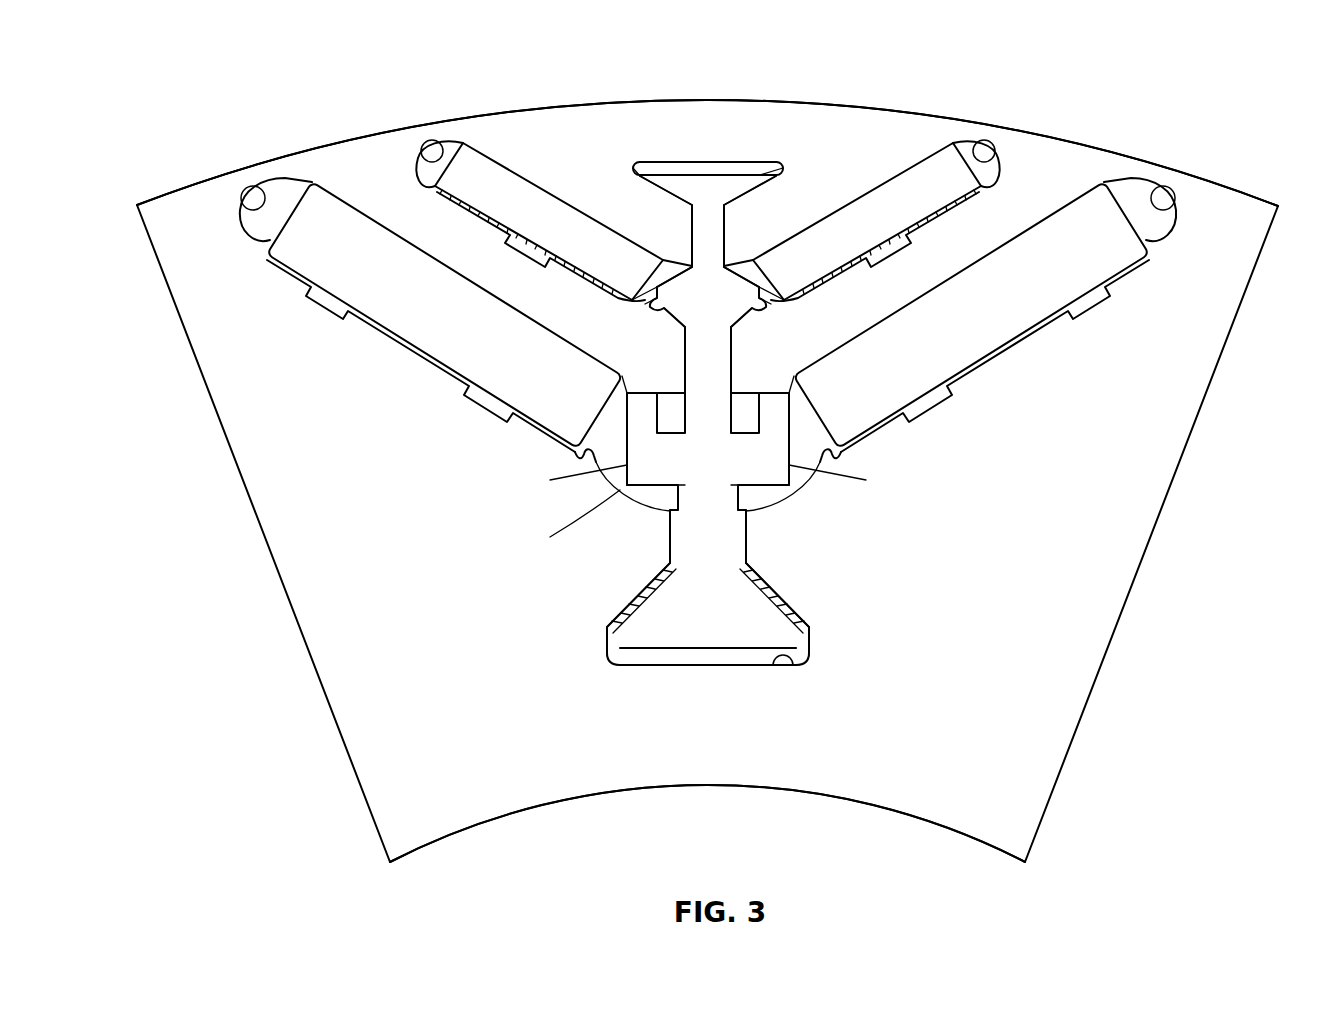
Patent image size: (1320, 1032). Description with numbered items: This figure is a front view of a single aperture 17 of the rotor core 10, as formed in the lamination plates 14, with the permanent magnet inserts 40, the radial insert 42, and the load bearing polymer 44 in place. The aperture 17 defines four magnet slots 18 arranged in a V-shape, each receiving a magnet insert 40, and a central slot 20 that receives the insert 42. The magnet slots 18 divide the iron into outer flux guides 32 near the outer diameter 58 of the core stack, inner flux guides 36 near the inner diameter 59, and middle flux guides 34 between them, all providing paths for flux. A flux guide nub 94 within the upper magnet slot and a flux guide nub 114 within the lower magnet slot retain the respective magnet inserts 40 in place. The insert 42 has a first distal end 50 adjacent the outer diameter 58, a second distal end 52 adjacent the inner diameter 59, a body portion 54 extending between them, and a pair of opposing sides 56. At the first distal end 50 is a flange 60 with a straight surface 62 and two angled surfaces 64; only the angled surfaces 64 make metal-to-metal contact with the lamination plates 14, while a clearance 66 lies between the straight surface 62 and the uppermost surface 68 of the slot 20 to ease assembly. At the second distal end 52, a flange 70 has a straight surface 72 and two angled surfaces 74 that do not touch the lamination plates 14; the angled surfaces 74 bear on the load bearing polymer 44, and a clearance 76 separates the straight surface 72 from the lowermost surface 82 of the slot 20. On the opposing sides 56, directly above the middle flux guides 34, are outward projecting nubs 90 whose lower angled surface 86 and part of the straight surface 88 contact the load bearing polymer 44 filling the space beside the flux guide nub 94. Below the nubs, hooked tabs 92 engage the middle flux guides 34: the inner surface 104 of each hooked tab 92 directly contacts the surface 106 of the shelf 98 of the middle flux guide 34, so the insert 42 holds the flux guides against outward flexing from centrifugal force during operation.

The rotor core 10 is at (1226, 126).
The lamination plates 14 is at (1190, 378).
The aperture 17 is at (826, 616).
The magnet slots 18 is at (420, 152).
The slot 20 is at (552, 536).
The outer flux guides 32 is at (647, 230).
The middle flux guides 34 is at (651, 368).
The inner flux guides 36 is at (625, 563).
The permanent magnet insert 40 is at (507, 178).
The insert 42 is at (655, 152).
The load bearing polymer 44 is at (522, 252).
The first distal end 50 is at (748, 168).
The second distal end 52 is at (655, 645).
The body portion 54 is at (738, 375).
The opposing sides 56 is at (668, 512).
The outer diameter 58 is at (472, 120).
The inner diameter 59 is at (872, 800).
The flange 60 is at (796, 160).
The straight surface 62 is at (768, 166).
The angled surfaces 64 is at (646, 178).
The clearance 66 is at (675, 165).
The uppermost surface 68 is at (725, 165).
The flange 70 is at (600, 662).
The straight surface 72 is at (752, 652).
The angled surfaces 74 is at (620, 610).
The clearance 76 is at (668, 657).
The lowermost surface 82 is at (790, 670).
The lower angled surface 86 is at (657, 347).
The straight surface 88 is at (652, 283).
The outward projecting nubs 90 is at (620, 230).
The hooked tabs 92 is at (600, 490).
The flux guide nub 94 is at (600, 292).
The shelf 98 is at (577, 353).
The inner surface 104 is at (688, 418).
The surface 106 is at (627, 463).
The flux guide nub 114 is at (568, 460).